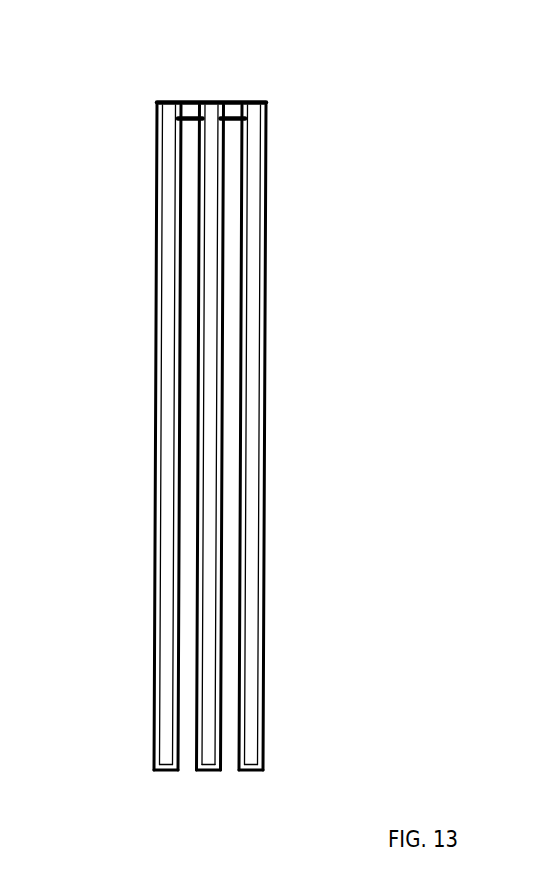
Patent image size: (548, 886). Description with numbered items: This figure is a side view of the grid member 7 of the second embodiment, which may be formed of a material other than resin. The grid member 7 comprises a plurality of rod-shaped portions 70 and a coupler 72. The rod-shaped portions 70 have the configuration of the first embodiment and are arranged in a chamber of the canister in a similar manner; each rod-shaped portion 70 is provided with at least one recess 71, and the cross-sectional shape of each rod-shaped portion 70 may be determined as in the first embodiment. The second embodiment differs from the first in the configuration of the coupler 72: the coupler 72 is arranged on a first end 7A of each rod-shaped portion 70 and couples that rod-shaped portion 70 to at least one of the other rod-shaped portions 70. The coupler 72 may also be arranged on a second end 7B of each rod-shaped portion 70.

The grid member 7 is at (98, 120).
The first end 7A is at (253, 92).
The second end 7B is at (215, 779).
The rod-shaped portion 70 is at (280, 601).
The recess 71 is at (266, 407).
The coupler 72 is at (233, 108).